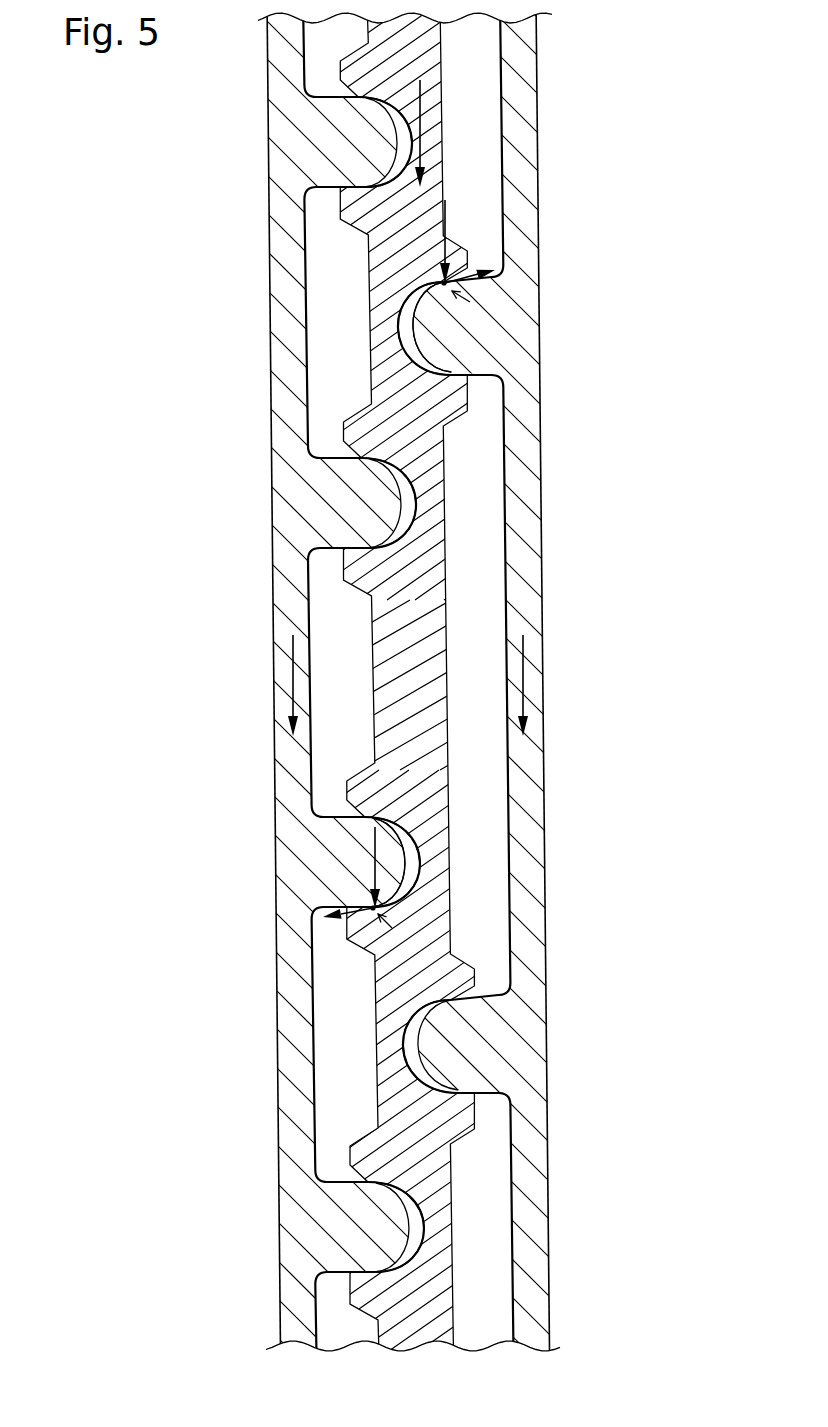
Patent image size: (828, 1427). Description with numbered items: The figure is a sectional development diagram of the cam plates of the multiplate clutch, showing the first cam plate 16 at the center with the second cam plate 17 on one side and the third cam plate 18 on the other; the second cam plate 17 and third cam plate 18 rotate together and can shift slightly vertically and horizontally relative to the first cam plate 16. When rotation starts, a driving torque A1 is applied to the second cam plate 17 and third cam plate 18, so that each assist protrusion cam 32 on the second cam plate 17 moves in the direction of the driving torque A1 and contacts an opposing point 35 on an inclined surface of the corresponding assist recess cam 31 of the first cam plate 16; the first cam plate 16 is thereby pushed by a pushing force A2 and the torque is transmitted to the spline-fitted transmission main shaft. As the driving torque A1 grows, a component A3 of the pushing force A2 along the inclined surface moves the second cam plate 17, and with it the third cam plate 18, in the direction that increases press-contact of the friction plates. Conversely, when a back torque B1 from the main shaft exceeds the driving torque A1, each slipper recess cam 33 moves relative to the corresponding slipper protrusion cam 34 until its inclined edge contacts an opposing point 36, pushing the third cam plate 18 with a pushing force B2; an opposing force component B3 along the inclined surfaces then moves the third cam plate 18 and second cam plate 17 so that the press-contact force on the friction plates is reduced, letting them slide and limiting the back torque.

The first cam plate 16 is at (413, 570).
The second cam plate 17 is at (292, 590).
The third cam plate 18 is at (522, 552).
The assist recess cam 31 is at (415, 895).
The assist protrusion cam 32 is at (393, 848).
The slipper recess cam 33 is at (440, 284).
The slipper protrusion cam 34 is at (457, 332).
The opposing point 35 is at (392, 928).
The opposing point 36 is at (470, 302).
The driving torque A1 is at (293, 677).
The pushing force A2 is at (376, 858).
The component of the pushing force A3 is at (340, 915).
The back torque B1 is at (420, 108).
The pushing force B2 is at (447, 212).
The opposing force component B3 is at (497, 268).